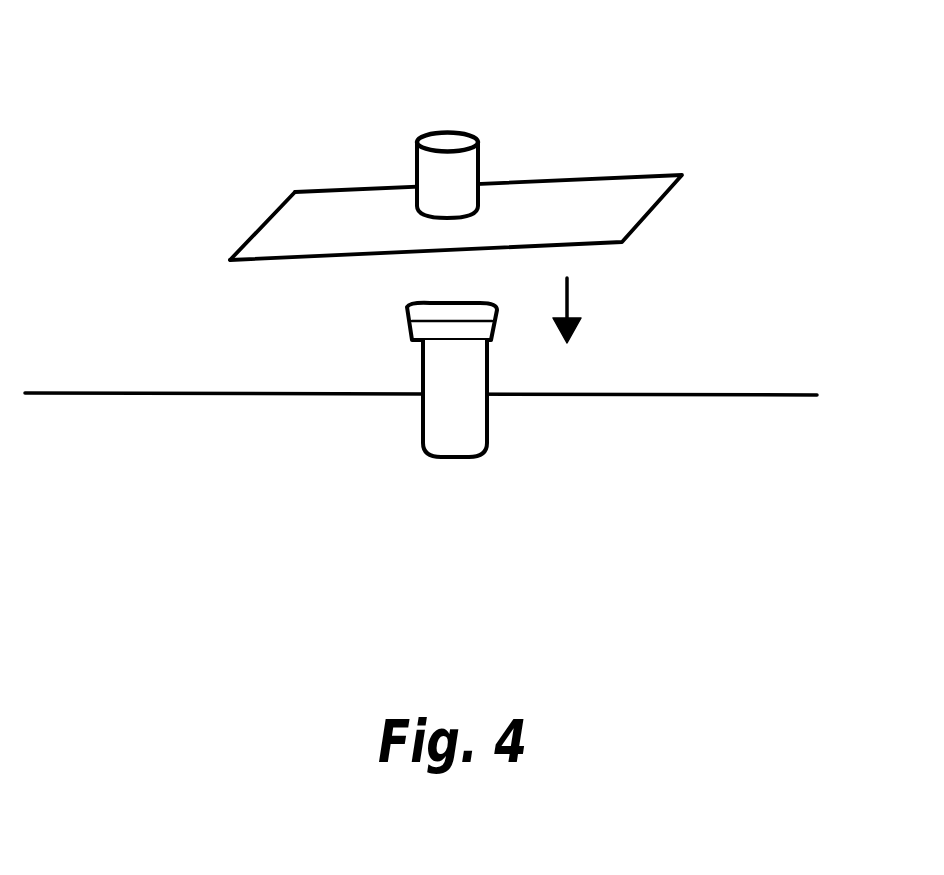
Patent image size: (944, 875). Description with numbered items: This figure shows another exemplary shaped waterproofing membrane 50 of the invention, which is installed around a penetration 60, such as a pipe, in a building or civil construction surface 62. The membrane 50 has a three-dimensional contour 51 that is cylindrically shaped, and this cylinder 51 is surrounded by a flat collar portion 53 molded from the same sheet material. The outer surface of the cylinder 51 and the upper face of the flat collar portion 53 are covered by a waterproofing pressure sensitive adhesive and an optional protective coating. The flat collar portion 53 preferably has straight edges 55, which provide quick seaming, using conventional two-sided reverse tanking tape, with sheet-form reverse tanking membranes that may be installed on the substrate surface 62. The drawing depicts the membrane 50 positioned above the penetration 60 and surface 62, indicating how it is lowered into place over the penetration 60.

The shaped waterproofing membrane 50 is at (436, 162).
The three-dimensional contour 51 is at (487, 133).
The flat collar portion 53 is at (578, 205).
The straight edges 55 is at (265, 226).
The penetration 60 is at (443, 360).
The building or civil construction surface 62 is at (175, 419).